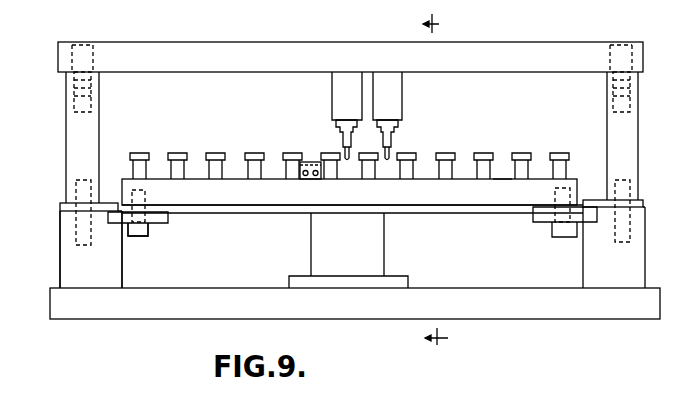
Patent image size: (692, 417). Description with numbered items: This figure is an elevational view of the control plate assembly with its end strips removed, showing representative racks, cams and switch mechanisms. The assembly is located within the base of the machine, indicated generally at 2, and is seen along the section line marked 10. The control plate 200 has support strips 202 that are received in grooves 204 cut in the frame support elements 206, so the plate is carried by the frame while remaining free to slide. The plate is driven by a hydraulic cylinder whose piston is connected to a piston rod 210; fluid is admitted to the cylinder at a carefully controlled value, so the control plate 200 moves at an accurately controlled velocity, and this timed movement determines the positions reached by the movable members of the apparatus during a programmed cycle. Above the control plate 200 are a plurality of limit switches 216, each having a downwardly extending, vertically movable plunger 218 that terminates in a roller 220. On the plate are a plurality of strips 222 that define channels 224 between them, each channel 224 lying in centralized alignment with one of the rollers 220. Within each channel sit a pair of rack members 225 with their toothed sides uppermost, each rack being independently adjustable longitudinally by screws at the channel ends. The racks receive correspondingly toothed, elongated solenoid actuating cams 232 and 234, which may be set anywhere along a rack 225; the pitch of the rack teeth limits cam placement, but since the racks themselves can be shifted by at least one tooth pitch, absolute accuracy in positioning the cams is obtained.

The press frame 2 is at (637, 102).
The section line 10- 10 is at (435, 184).
The control plate 200 is at (273, 203).
The support strips 202 is at (168, 215).
The grooves 204 is at (113, 222).
The frame support elements 206 is at (122, 265).
The piston rod 210 is at (350, 37).
The limit switches 216 is at (402, 90).
The plunger 218 is at (397, 136).
The roller 220 is at (391, 149).
The strips 222 is at (482, 162).
The channels 224 is at (537, 167).
The rack members 225 is at (306, 180).
The cam 232 is at (299, 164).
The cam 234 is at (312, 162).